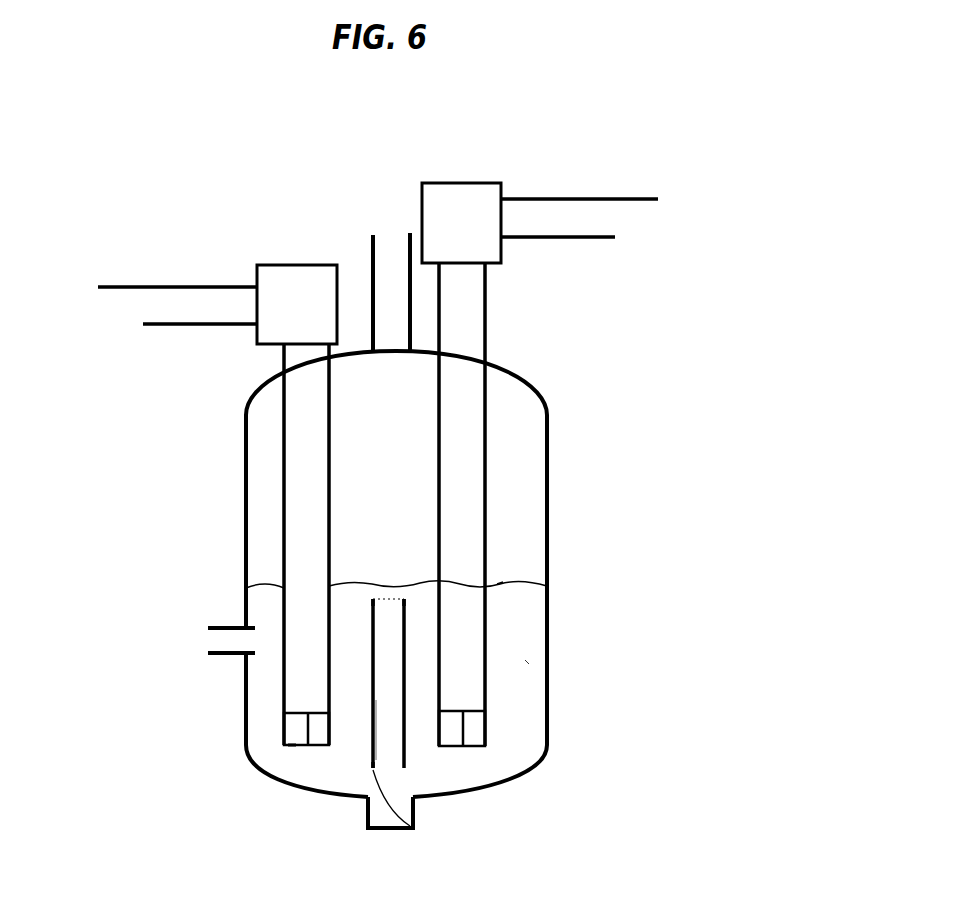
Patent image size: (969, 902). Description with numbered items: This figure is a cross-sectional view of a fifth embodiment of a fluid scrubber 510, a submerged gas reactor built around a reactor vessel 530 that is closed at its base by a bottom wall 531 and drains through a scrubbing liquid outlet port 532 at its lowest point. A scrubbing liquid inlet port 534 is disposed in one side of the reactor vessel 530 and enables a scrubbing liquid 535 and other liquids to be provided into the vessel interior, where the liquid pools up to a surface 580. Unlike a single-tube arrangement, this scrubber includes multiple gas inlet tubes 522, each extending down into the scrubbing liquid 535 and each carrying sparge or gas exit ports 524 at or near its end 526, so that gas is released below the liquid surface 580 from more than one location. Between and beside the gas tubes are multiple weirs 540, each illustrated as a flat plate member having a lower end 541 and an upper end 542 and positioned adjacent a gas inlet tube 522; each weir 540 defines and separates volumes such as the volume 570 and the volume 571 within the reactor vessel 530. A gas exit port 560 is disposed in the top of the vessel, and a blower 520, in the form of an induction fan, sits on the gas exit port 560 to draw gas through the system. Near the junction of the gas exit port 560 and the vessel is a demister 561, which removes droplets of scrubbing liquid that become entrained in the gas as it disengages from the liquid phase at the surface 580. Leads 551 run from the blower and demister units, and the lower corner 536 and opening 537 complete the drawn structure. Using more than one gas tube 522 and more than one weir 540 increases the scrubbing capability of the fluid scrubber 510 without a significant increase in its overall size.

The fluid scrubber 510 is at (226, 557).
The blower 520 is at (267, 328).
The gas inlet tube 522 is at (298, 468).
The gas exit ports 524 is at (283, 730).
The end of gas inlet tube 526 is at (292, 748).
The reactor vessel 530 is at (548, 424).
The bottom wall 531 is at (452, 797).
The scrubbing liquid outlet port 532 is at (380, 812).
The scrubbing liquid inlet port 534 is at (206, 652).
The scrubbing liquid 535 is at (535, 602).
The outlet wall 536 is at (413, 826).
The inner tube opening 537 is at (362, 597).
The weir 540 is at (376, 706).
The lower end of weir 541 is at (373, 770).
The upper end of weir 542 is at (380, 593).
The electrical leads 551 is at (150, 328).
The gas exit port 560 is at (370, 240).
The demister 561 is at (487, 393).
The first volume 570 is at (357, 752).
The second volume 571 is at (527, 662).
The surface of scrubbing liquid 580 is at (500, 582).